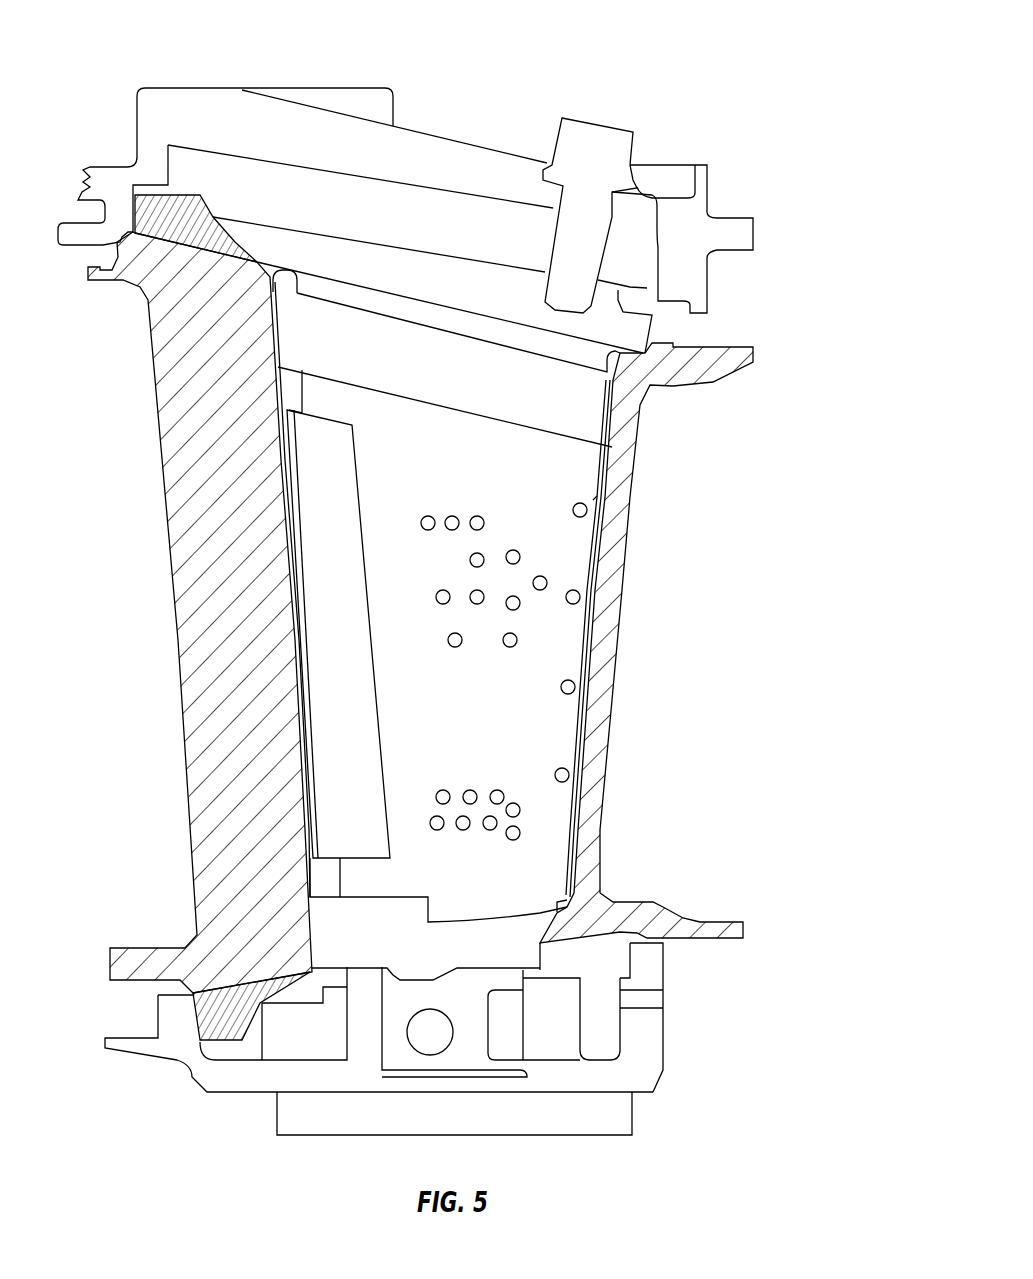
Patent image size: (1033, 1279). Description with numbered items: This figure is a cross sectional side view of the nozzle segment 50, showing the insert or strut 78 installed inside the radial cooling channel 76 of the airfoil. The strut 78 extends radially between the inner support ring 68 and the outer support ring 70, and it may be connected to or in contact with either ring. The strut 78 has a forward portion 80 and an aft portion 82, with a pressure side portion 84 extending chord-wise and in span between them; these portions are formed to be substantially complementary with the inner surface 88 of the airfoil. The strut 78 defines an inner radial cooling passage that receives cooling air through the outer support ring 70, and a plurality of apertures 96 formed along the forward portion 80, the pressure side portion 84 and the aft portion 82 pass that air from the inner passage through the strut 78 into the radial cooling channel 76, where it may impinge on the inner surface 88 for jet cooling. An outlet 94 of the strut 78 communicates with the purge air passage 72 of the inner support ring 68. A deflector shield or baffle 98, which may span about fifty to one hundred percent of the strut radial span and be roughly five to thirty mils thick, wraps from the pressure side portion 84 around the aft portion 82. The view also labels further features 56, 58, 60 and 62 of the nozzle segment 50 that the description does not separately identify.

The nozzle segment 50 is at (647, 62).
The aft flange 56 is at (744, 928).
The forward flange 58 is at (753, 362).
The outer wall 60 is at (658, 648).
The inner wall 62 is at (160, 668).
The inner support ring 68 is at (185, 1095).
The outer support ring 70 is at (443, 138).
The purge air passage 72 is at (638, 997).
The radial cooling channel 76 is at (290, 387).
The strut 78 is at (545, 878).
The forward portion 80 is at (573, 712).
The aft portion 82 is at (345, 865).
The pressure side portion 84 is at (461, 723).
The inner surface 88 is at (280, 397).
The outlet 94 is at (499, 1030).
The apertures 96 is at (520, 557).
The baffle 98 is at (318, 567).